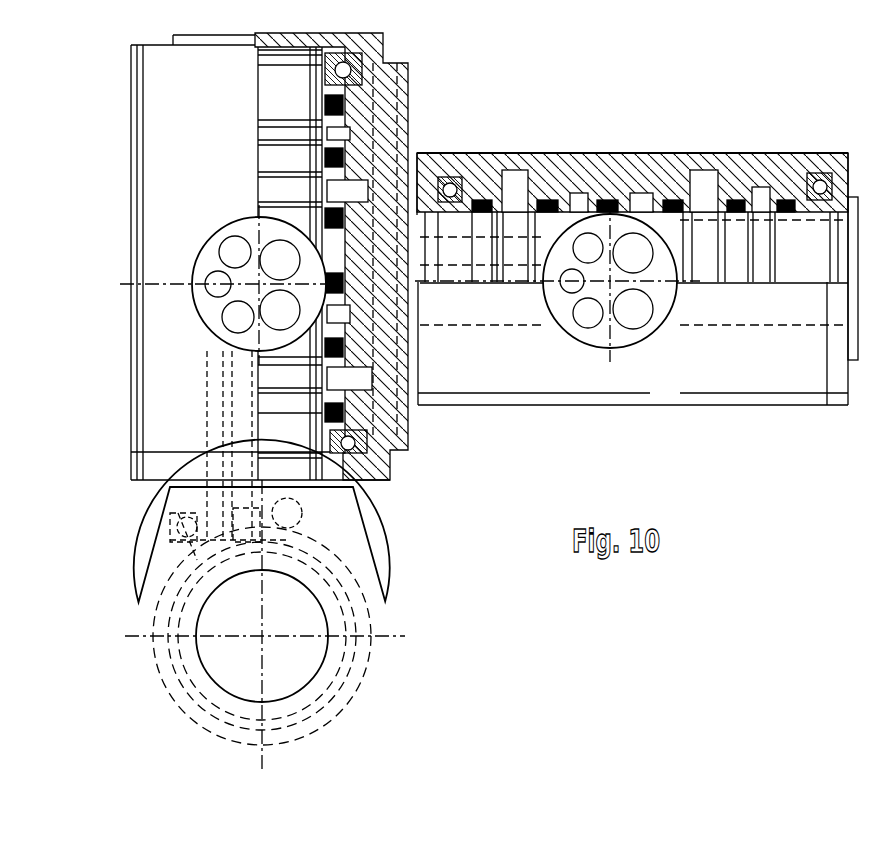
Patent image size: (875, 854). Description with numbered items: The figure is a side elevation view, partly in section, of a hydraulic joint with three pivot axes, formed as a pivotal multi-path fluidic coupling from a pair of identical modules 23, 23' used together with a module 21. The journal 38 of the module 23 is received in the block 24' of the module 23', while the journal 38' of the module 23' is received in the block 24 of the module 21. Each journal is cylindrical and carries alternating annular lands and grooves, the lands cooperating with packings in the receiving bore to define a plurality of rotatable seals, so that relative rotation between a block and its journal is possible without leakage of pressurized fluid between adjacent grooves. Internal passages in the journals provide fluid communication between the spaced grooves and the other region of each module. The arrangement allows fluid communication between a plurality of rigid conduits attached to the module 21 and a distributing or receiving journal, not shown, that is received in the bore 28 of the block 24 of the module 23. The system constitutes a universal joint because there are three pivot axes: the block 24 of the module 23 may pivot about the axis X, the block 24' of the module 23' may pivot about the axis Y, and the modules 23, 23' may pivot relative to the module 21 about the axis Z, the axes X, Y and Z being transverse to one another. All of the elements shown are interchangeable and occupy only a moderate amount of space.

The first interchangeable module 21 is at (665, 153).
The third modular element 23 is at (201, 455).
The third modular element 23' is at (233, 257).
The block 24 is at (491, 402).
The block 24' is at (199, 263).
The cylindrical bore 28 is at (207, 603).
The journal 38 is at (268, 254).
The journal 38' is at (507, 199).
The pivot axis X is at (262, 637).
The pivot axis Y is at (256, 230).
The pivot axis Z is at (667, 308).